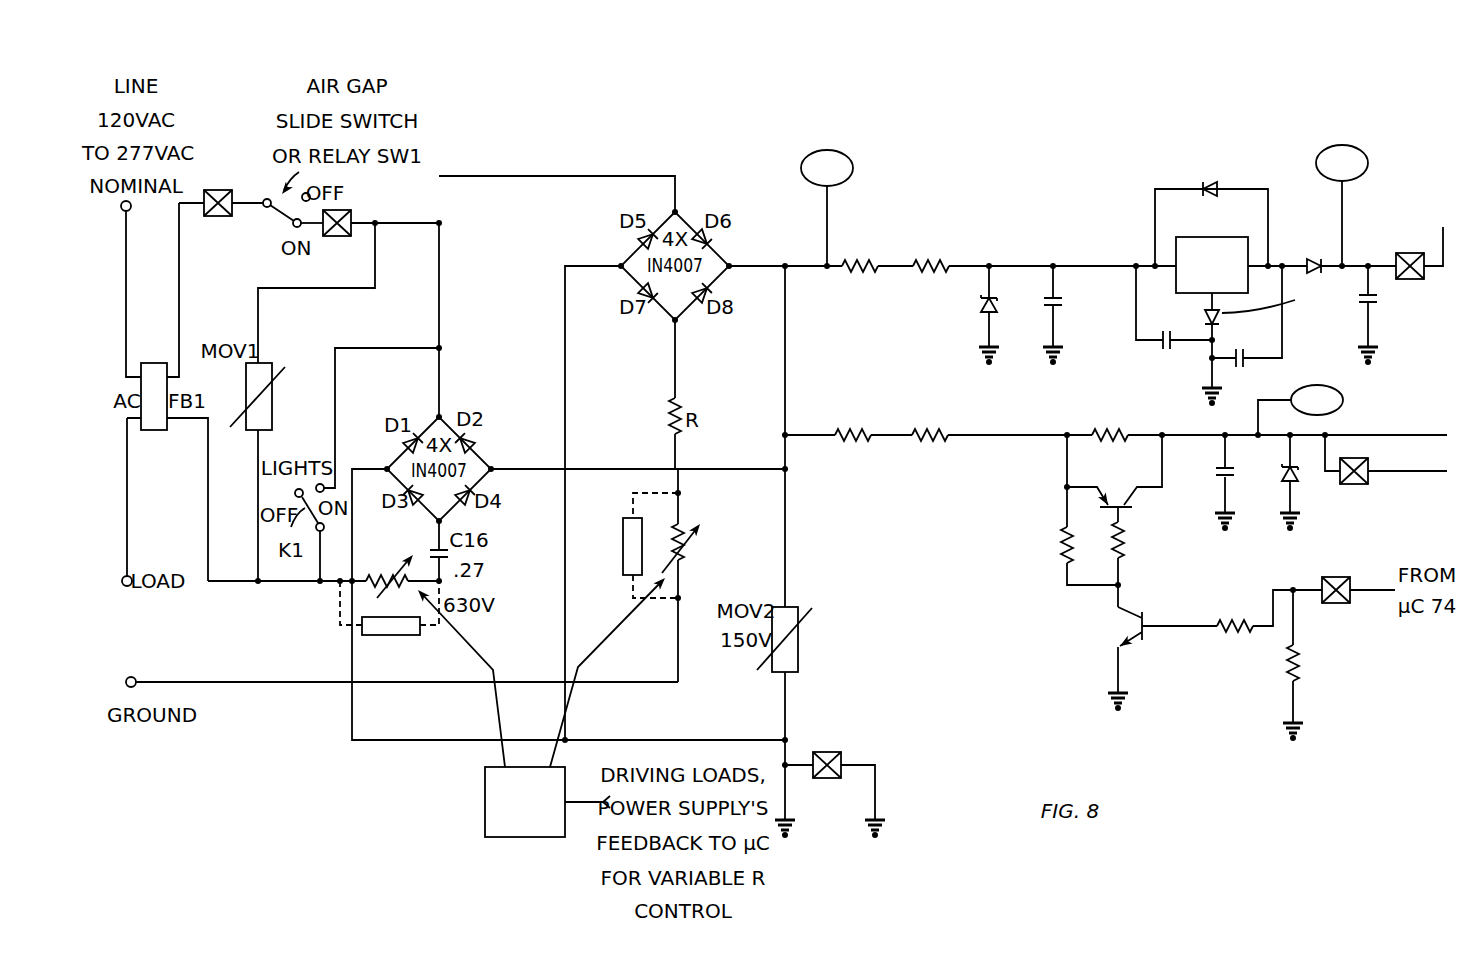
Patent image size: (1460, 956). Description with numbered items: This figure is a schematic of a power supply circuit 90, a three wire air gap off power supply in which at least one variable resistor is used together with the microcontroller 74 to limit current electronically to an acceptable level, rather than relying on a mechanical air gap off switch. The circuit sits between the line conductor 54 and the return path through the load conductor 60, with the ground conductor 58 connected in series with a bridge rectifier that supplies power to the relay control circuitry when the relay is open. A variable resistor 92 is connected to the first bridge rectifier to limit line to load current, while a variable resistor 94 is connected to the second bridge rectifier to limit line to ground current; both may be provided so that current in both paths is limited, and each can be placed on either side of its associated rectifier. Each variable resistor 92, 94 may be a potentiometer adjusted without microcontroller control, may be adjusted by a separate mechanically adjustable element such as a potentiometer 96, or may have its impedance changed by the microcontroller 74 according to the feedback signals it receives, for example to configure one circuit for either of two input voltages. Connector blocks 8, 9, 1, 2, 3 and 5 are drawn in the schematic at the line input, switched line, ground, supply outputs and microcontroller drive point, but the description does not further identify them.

The line conductor 54 is at (129, 238).
The load conductor 60 is at (129, 485).
The ground conductor 58 is at (228, 686).
The line connector 8 is at (218, 220).
The switched line connector 9 is at (337, 240).
The microcontroller 74 is at (543, 838).
The variable resistor 92 is at (386, 572).
The variable resistor 94 is at (683, 566).
The potentiometer 96 is at (410, 636).
The power supply circuit 90 is at (938, 165).
The connector 1 is at (835, 794).
The connector 2 is at (1386, 476).
The connector 3 is at (1410, 251).
The connector 5 is at (1358, 606).